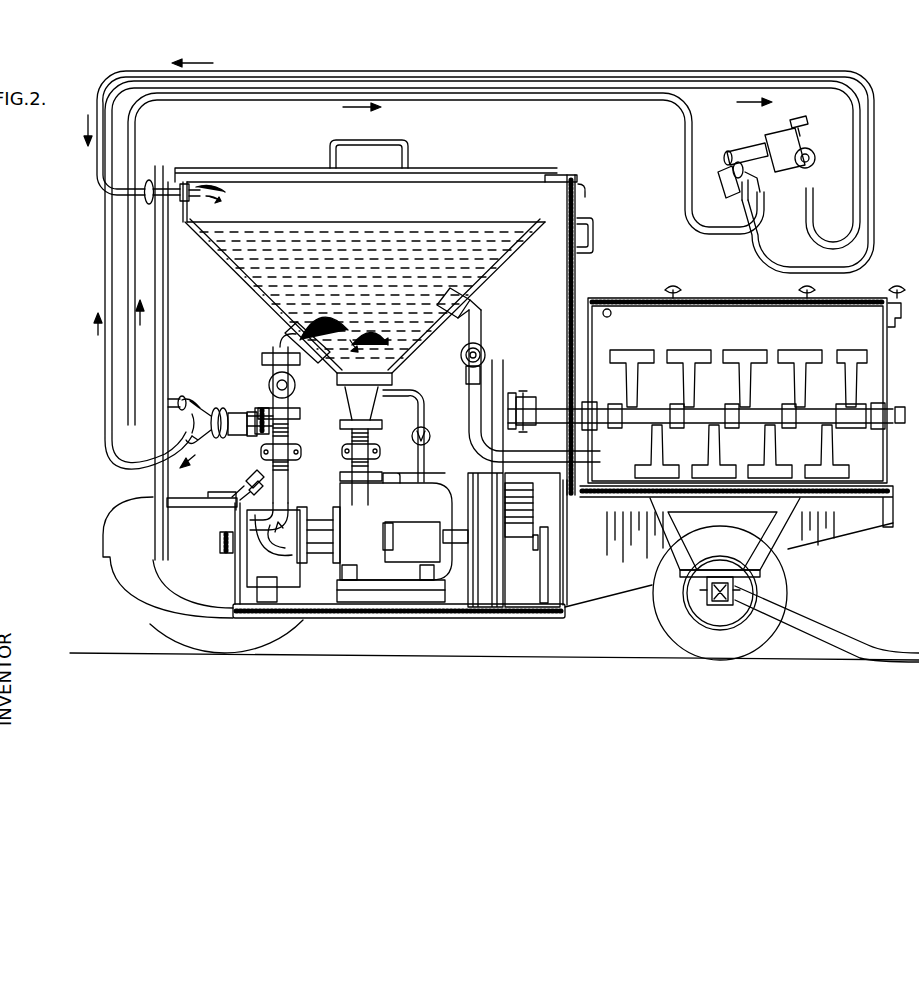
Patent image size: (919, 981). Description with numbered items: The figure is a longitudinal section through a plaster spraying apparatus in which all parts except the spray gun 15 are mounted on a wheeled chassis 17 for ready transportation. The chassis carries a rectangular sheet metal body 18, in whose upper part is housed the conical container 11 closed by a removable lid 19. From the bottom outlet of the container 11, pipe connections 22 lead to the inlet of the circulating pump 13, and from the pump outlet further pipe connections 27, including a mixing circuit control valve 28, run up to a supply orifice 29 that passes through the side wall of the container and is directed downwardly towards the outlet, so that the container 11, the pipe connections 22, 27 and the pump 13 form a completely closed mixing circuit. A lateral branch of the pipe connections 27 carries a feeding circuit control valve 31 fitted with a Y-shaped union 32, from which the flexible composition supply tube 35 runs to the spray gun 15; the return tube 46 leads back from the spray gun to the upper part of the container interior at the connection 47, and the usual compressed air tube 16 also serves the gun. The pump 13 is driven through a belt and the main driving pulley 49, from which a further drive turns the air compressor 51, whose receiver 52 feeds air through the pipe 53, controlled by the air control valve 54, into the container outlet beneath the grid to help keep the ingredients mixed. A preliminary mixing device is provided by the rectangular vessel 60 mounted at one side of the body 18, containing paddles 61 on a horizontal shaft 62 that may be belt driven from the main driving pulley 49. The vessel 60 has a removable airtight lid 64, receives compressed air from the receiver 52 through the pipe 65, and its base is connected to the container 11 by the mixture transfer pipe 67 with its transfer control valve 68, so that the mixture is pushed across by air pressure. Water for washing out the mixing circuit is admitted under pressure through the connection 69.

The container 11 is at (216, 254).
The circulating pump 13 is at (318, 540).
The spray gun 15 is at (752, 140).
The tube connection for air under pressure 16 is at (128, 422).
The wheeled chassis 17 is at (565, 622).
The sheet metal body 18 is at (165, 322).
The lid 19 is at (478, 173).
The pipe connections 22 is at (346, 452).
The pipe connections 27 is at (289, 438).
The mixing circuit control valve 28 is at (295, 388).
The supply orifice 29 is at (336, 344).
The feeding circuit control valve 31 is at (260, 418).
The Y-shaped union 32 is at (212, 432).
The flexible composition supply tube 35 is at (105, 300).
The tube 46 is at (97, 178).
The tube connection to container 47 is at (215, 193).
The main driving pulley 49 is at (484, 592).
The air compressor 51 is at (520, 556).
The air receiver 52 is at (447, 492).
The pipe 53 is at (428, 400).
The air control valve 54 is at (412, 437).
The rectangular vessel 60 is at (866, 350).
The paddles 61 is at (733, 354).
The horizontal shaft 62 is at (867, 428).
The airtight lid 64 is at (745, 300).
The pipe 65 is at (611, 316).
The mixture transfer pipe 67 is at (472, 432).
The transfer control valve 68 is at (484, 350).
The connection 69 is at (246, 484).